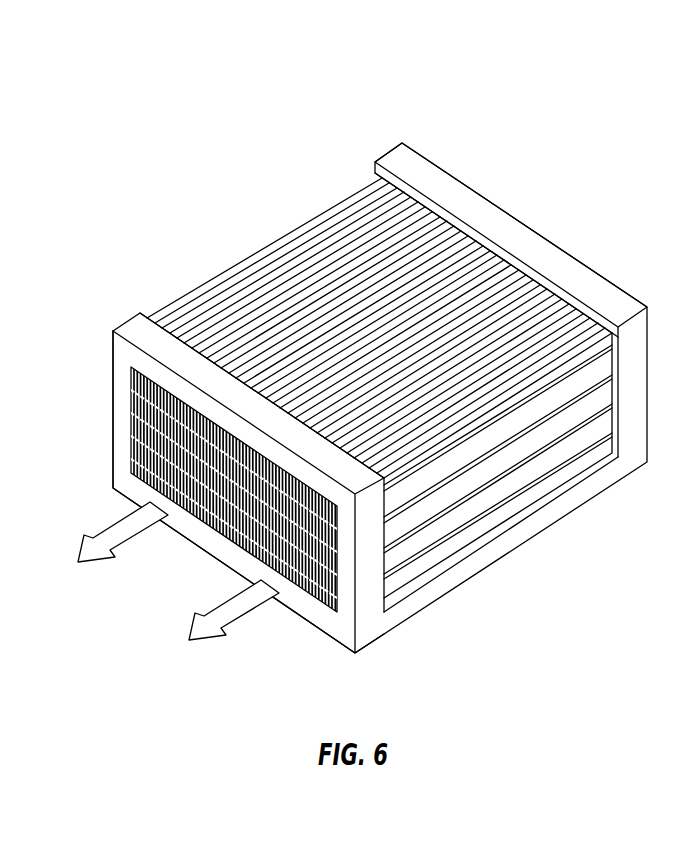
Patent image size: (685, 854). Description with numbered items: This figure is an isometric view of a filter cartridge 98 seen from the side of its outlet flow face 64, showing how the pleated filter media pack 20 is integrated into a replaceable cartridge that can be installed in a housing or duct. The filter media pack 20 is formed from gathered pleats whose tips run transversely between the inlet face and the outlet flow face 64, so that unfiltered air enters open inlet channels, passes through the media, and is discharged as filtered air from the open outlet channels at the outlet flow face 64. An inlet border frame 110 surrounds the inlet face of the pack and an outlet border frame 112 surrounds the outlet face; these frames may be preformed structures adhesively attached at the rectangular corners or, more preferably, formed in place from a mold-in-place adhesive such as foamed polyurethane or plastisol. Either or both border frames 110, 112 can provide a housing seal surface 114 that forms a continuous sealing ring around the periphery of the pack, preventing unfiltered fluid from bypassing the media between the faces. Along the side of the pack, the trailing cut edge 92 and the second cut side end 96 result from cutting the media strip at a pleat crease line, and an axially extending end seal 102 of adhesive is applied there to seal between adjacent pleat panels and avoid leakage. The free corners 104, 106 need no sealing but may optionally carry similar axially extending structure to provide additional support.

The filter cartridge 98 is at (545, 150).
The filter media pack 20 is at (277, 250).
The free corner 104 is at (348, 193).
The inlet border frame 110 is at (395, 157).
The outlet border frame 112 is at (135, 329).
The housing seal surface 114 is at (153, 369).
The outlet flow face 64 is at (227, 525).
The free corner 106 is at (523, 385).
The second cut side end 96 is at (492, 525).
The trailing cut edge 92 is at (433, 593).
The end seal 102 is at (383, 630).